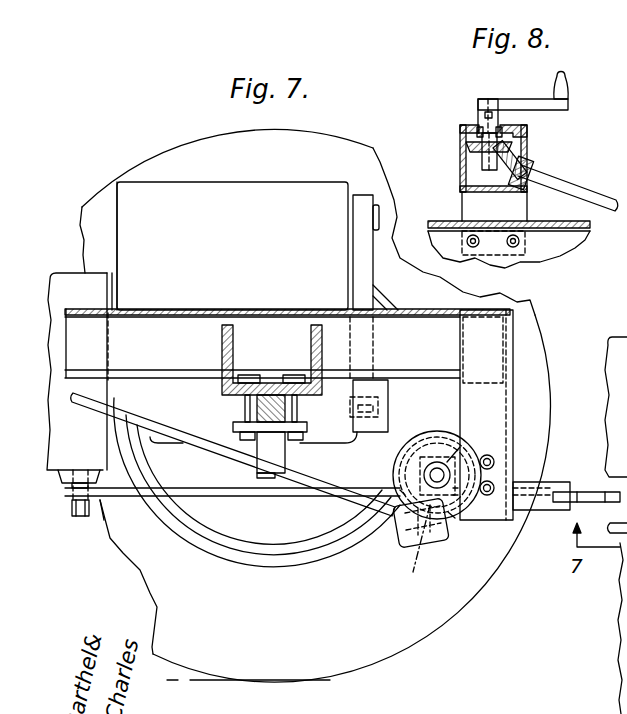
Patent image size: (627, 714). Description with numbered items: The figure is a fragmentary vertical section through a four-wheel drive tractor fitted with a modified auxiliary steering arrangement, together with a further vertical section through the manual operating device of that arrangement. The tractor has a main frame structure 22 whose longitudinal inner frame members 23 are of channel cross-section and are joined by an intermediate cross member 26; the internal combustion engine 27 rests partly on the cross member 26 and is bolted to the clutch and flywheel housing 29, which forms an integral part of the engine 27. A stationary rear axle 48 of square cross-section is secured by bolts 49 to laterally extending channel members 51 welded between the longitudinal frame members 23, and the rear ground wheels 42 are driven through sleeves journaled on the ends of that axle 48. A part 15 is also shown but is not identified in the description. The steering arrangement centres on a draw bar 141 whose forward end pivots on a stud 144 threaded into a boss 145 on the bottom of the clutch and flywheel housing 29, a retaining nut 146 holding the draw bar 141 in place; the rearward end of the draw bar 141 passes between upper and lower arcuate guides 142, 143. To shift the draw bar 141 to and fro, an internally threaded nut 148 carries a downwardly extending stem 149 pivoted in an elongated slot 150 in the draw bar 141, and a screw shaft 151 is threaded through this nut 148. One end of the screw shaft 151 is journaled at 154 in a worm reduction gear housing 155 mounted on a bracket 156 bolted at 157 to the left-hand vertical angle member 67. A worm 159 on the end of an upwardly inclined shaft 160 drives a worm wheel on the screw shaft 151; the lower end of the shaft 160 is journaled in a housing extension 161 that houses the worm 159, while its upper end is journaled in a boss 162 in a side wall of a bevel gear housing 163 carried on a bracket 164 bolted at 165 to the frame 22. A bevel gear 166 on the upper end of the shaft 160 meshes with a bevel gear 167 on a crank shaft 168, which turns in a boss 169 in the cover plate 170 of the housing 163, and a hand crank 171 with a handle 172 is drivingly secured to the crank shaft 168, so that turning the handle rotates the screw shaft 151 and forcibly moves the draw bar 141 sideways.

In FIG. 7, the base plate 15 is at (190, 312).
In FIG. 8, the base plate 15 is at (626, 166).
In FIG. 8, the main frame structure 22 is at (569, 256).
In FIG. 7, the longitudinal inner frame members 23 is at (165, 366).
In FIG. 8, the longitudinal inner frame members 23 is at (536, 229).
In FIG. 7, the intermediate cross member 26 is at (380, 398).
In FIG. 7, the internal combustion engine 27 is at (263, 195).
In FIG. 7, the clutch and flywheel housing 29 is at (63, 285).
In FIG. 7, the rear ground wheels 42 is at (445, 608).
In FIG. 7, the rear axle 48 is at (307, 418).
In FIG. 7, the bolts 49 is at (245, 408).
In FIG. 7, the channel members 51 is at (222, 346).
In FIG. 7, the vertical angle member 67 is at (500, 398).
In FIG. 7, the draw bar 141 is at (268, 496).
In FIG. 7, the upper arcuate guide 142 is at (560, 480).
In FIG. 7, the lower arcuate guide 143 is at (567, 512).
In FIG. 7, the stud 144 is at (85, 521).
In FIG. 7, the boss 145 is at (70, 486).
In FIG. 7, the retaining nut 146 is at (70, 504).
In FIG. 7, the internally threaded nut 148 is at (420, 458).
In FIG. 7, the stem 149 is at (455, 518).
In FIG. 7, the elongated slot 150 is at (400, 490).
In FIG. 7, the screw shaft 151 is at (447, 462).
In FIG. 7, the journal 154 is at (430, 472).
In FIG. 7, the worm reduction gear housing 155 is at (444, 440).
In FIG. 7, the bracket 156 is at (460, 443).
In FIG. 7, the bolts 157 is at (495, 463).
In FIG. 7, the worm 159 is at (417, 547).
In FIG. 7, the upwardly inclined shaft 160 is at (334, 484).
In FIG. 8, the upwardly inclined shaft 160 is at (580, 189).
In FIG. 7, the housing extension 161 is at (394, 545).
In FIG. 8, the boss 162 is at (533, 167).
In FIG. 8, the bevel gear housing 163 is at (462, 160).
In FIG. 8, the bracket 164 is at (462, 209).
In FIG. 8, the bolts 165 is at (478, 247).
In FIG. 8, the bevel gear 166 is at (484, 182).
In FIG. 8, the bevel gear 167 is at (482, 153).
In FIG. 8, the crank shaft 168 is at (480, 120).
In FIG. 8, the boss 169 is at (500, 128).
In FIG. 8, the cover plate 170 is at (527, 130).
In FIG. 8, the hand crank 171 is at (527, 100).
In FIG. 8, the handle 172 is at (567, 74).